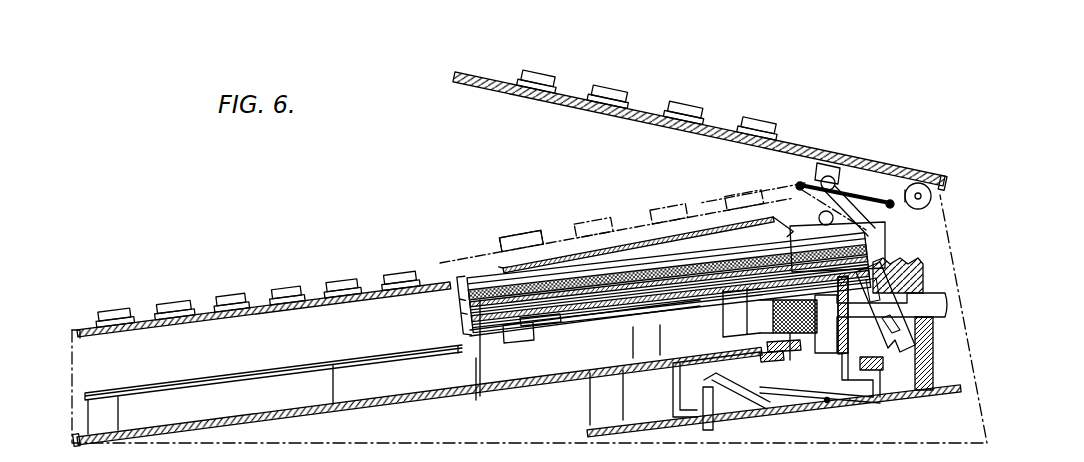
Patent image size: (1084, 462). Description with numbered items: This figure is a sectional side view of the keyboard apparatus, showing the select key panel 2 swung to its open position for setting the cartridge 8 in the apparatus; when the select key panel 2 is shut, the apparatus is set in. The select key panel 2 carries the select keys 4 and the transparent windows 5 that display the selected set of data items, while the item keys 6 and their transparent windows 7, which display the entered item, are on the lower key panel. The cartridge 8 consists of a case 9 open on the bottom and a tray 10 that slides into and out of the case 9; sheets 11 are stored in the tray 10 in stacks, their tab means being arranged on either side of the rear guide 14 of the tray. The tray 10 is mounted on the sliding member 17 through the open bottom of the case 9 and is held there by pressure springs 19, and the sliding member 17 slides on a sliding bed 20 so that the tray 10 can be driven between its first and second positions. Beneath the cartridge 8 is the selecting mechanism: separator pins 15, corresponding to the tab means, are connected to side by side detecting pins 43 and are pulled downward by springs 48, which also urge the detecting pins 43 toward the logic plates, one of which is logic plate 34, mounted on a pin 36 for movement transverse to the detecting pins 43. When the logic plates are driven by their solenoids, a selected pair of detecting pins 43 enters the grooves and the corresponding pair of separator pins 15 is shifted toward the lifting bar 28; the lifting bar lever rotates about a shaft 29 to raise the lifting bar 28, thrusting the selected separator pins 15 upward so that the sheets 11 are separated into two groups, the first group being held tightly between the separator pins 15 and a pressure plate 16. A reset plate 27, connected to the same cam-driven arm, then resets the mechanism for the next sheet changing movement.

The select key panel 2 is at (808, 153).
The select keys 4 is at (688, 113).
The transparent windows 5 is at (607, 107).
The item keys 6 is at (224, 304).
The transparent windows 7 is at (178, 314).
The cartridge 8 is at (650, 252).
The case 9 is at (530, 258).
The tray 10 is at (697, 300).
The sheets 11 is at (570, 315).
The rear guide 14 is at (870, 256).
The separator pins 15 is at (905, 325).
The pressure plate 16 is at (876, 196).
The sliding member 17 is at (493, 322).
The pressure springs 19 is at (457, 305).
The sliding bed 20 is at (333, 372).
The reset plate 27 is at (829, 402).
The lifting bar 28 is at (883, 362).
The shaft 29 is at (703, 396).
The logic plate 34 is at (800, 332).
The pin 36 is at (737, 330).
The detecting pins 43 is at (940, 300).
The springs 48 is at (903, 270).